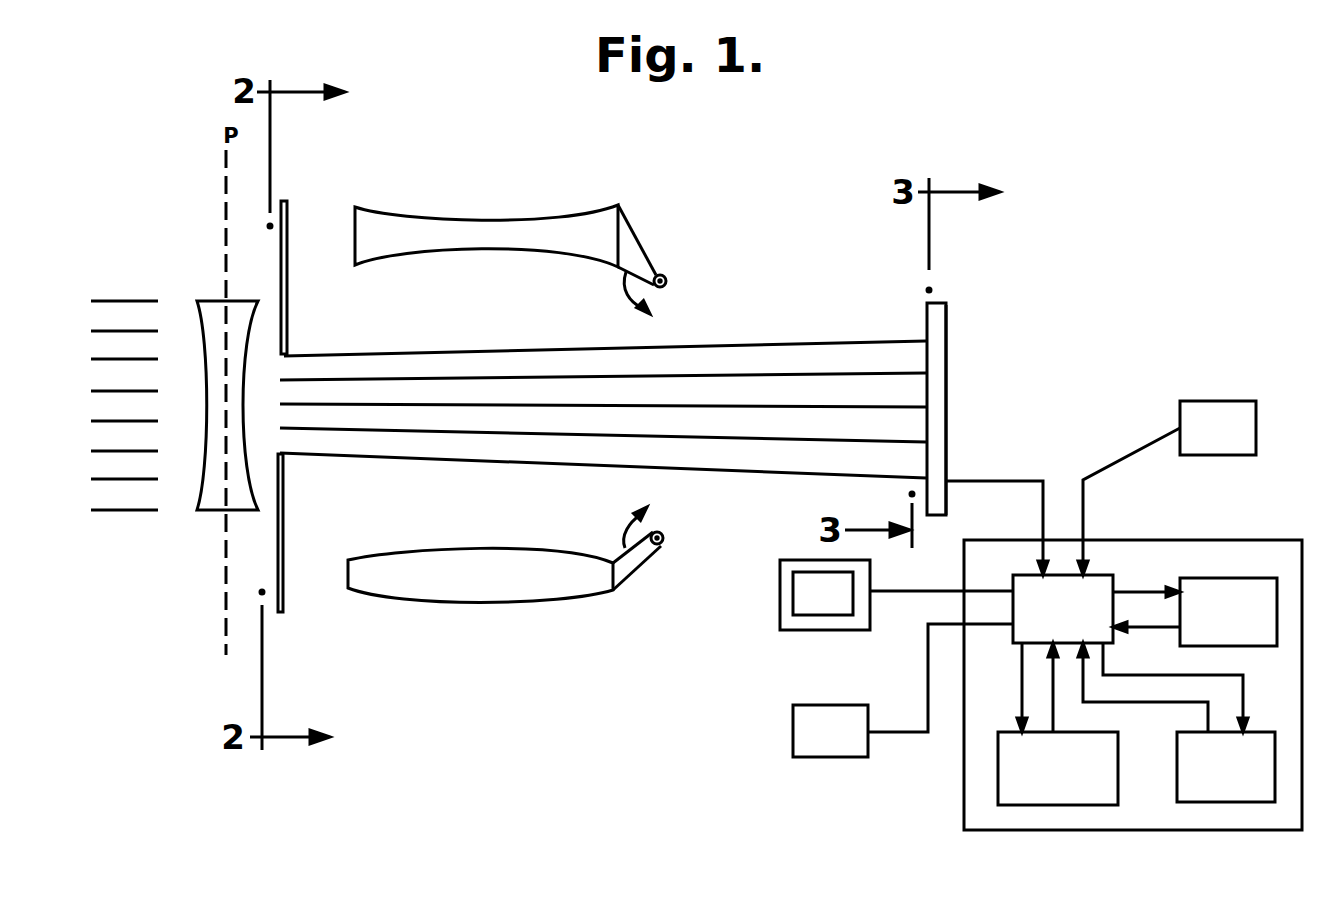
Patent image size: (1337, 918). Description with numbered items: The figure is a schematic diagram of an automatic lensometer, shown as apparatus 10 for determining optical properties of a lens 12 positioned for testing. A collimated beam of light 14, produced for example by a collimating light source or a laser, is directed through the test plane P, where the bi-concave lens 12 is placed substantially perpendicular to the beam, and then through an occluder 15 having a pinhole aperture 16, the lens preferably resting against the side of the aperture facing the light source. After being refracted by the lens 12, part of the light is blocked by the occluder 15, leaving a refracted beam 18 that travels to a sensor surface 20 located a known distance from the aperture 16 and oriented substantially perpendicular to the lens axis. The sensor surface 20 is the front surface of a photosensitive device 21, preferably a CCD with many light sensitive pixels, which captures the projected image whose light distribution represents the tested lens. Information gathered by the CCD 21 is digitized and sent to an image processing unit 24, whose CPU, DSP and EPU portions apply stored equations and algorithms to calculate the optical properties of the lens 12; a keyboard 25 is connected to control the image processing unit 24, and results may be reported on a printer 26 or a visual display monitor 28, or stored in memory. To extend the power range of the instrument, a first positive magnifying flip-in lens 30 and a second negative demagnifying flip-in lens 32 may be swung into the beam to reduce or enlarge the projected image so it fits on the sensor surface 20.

The apparatus 10 is at (565, 688).
The lens 12 is at (203, 512).
The collimated beam of light 14 is at (118, 290).
The occluder 15 is at (284, 580).
The pinhole aperture 16 is at (294, 448).
The refracted beam 18 is at (490, 345).
The sensor surface 20 is at (926, 318).
The photosensitive device 21 is at (948, 325).
The image processing unit 24 is at (1080, 830).
The keyboard 25 is at (1235, 401).
The printer 26 is at (828, 757).
The visual display monitor 28 is at (780, 594).
The first positive magnifying flip-in lens 30 is at (505, 222).
The second negative demagnifying flip-in lens 32 is at (453, 603).